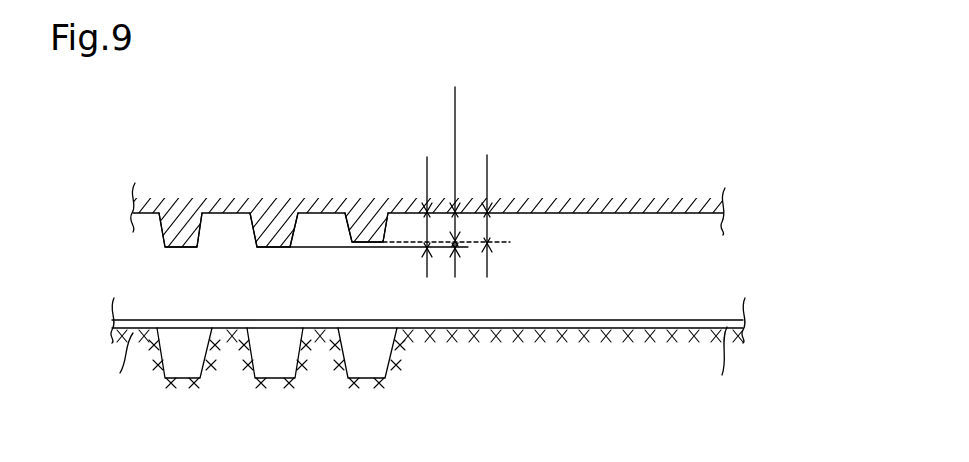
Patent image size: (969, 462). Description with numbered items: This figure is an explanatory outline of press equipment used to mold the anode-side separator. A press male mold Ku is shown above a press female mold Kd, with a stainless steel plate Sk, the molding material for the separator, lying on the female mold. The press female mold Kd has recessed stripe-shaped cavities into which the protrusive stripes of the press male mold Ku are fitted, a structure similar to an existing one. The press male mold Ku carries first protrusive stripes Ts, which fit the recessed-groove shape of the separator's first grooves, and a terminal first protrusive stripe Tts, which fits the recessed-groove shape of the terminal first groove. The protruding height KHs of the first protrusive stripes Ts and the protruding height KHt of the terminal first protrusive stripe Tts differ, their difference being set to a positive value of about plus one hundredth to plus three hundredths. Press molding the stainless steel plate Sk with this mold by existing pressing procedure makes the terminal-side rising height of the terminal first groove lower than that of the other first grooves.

The press male mold Ku is at (148, 217).
The first protrusive stripes Ts is at (182, 243).
The terminal first protrusive stripes Tts is at (365, 243).
The protruding height of the first protrusive stripes KHs is at (379, 204).
The protruding height of the terminal first protrusive stripes KHt is at (446, 204).
The stainless steel plate Sk is at (697, 318).
The press female mold Kd is at (152, 358).